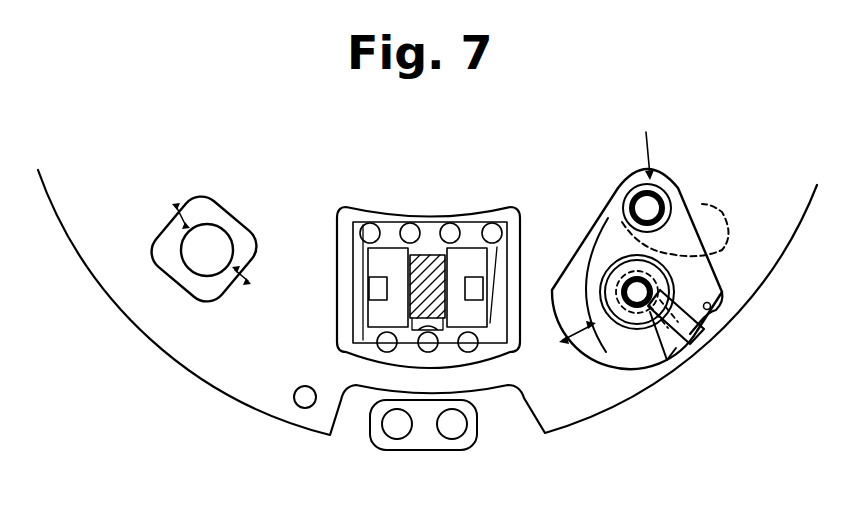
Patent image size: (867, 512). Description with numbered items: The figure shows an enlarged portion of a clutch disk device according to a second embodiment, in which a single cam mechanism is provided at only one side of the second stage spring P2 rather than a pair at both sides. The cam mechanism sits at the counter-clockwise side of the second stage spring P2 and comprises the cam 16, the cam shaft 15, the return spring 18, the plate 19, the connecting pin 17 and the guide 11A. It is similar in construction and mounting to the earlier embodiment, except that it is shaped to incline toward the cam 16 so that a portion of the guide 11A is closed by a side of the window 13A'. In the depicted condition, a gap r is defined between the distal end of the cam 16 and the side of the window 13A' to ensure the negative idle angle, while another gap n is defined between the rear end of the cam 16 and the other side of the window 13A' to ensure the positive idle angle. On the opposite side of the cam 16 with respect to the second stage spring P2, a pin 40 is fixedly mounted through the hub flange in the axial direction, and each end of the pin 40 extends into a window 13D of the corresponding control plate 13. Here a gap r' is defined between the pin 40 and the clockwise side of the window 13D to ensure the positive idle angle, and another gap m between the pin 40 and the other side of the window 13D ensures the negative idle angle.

The control plate 13 is at (252, 398).
The window 13D is at (167, 248).
The pin 40 is at (205, 271).
The gap m is at (255, 264).
The gap r' is at (197, 178).
The second stage spring P2 is at (470, 345).
The cam 16 is at (608, 245).
The connecting pin 17 is at (626, 194).
The gap r is at (646, 136).
The guide 11A is at (702, 204).
The gap n is at (565, 337).
The cam shaft 15 is at (633, 308).
The return spring 18 is at (673, 357).
The plate 19 is at (680, 330).
The window 13A' is at (758, 323).